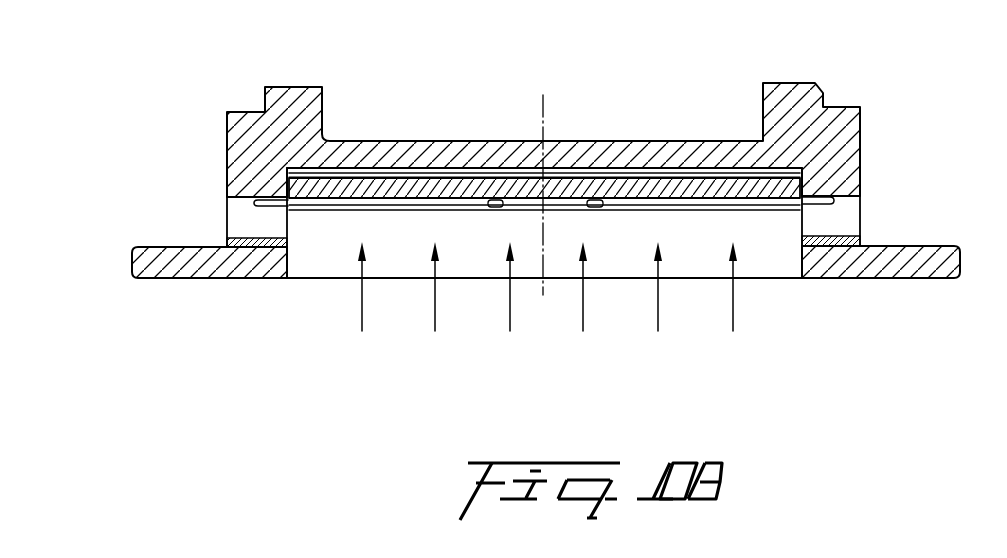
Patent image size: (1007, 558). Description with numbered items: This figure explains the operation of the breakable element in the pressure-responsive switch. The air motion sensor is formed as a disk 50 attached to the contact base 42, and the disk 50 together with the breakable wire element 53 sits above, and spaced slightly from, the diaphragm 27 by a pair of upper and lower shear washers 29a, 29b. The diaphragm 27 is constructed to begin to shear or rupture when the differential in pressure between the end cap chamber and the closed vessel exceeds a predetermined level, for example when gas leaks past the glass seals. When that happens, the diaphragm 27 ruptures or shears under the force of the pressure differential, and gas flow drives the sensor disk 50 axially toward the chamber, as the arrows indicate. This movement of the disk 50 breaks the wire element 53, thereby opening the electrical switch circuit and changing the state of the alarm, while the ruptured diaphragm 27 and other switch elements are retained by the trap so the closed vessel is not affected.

The contact base 42 is at (275, 87).
The breakable wire element 53 is at (620, 165).
The sensor disk 50 is at (697, 203).
The diaphragm 27 is at (323, 214).
The upper shear washer 29a is at (228, 242).
The lower shear washer 29b is at (134, 280).